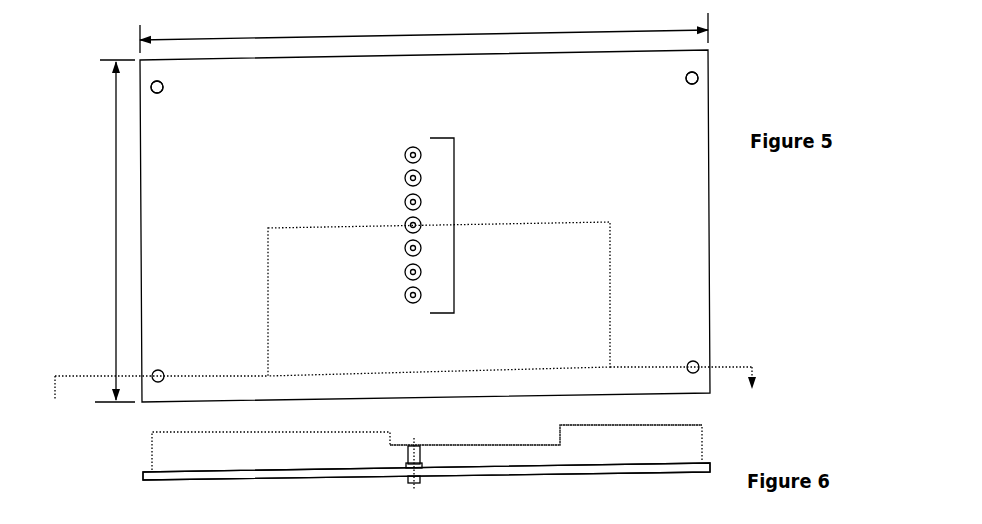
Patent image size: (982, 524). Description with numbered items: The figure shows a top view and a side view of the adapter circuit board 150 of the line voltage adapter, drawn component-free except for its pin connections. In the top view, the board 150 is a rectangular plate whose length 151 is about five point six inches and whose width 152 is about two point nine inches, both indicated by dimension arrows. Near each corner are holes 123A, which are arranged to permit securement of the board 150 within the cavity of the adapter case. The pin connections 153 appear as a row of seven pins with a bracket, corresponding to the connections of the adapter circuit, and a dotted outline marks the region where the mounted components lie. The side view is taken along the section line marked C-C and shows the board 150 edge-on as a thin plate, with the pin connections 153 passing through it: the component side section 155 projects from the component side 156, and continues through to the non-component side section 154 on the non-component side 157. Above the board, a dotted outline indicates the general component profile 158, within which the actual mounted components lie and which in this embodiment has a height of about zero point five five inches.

In FIG. 5, the board 150 is at (732, 308).
In FIG. 6, the board 150 is at (730, 457).
In FIG. 5, the length 151 is at (424, 30).
In FIG. 5, the width 152 is at (99, 231).
In FIG. 5, the holes 123A is at (683, 79).
In FIG. 5, the pin connections 153 is at (455, 242).
In FIG. 6, the pin connections 153 is at (422, 440).
In FIG. 6, the non-component side section 154 is at (405, 454).
In FIG. 6, the component side section 155 is at (407, 480).
In FIG. 6, the component side 156 is at (478, 476).
In FIG. 6, the non-component side 157 is at (548, 383).
In FIG. 6, the component profile 158 is at (150, 457).